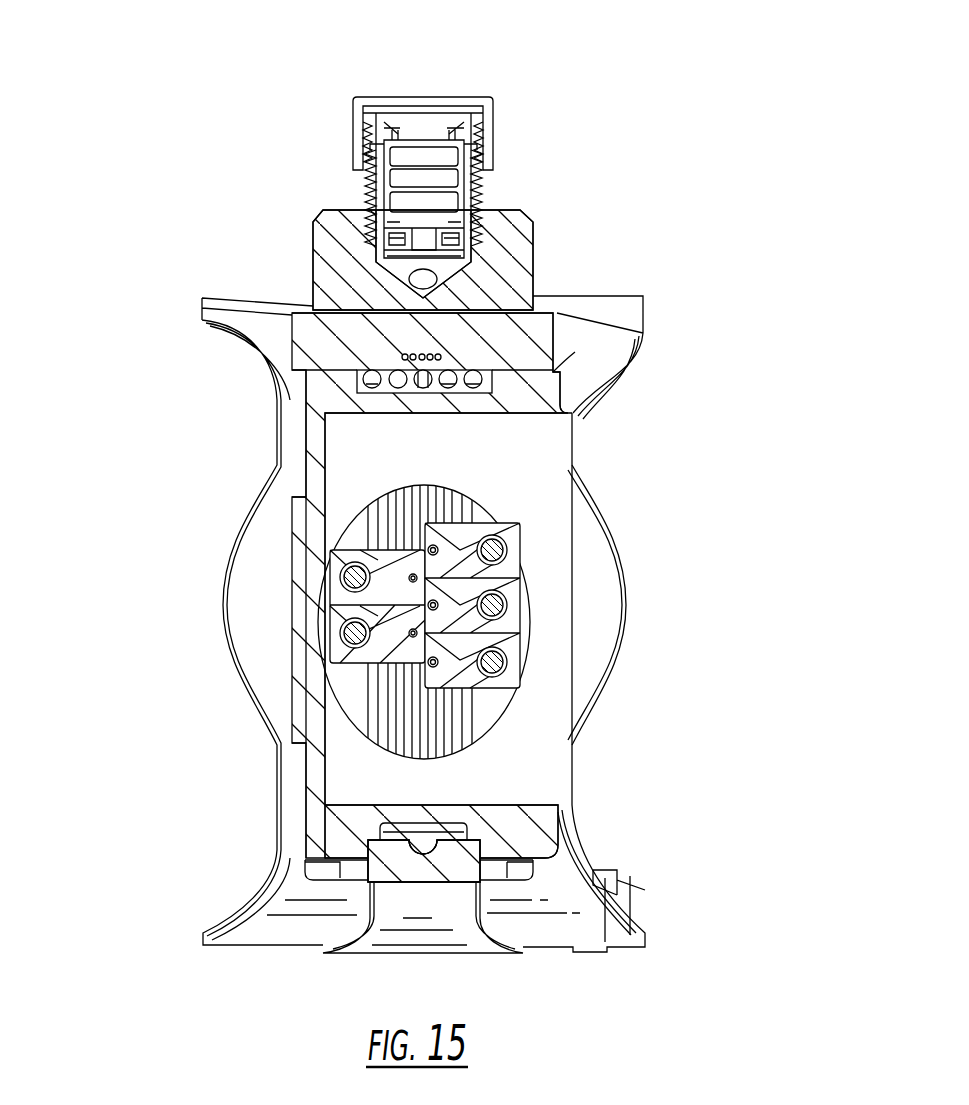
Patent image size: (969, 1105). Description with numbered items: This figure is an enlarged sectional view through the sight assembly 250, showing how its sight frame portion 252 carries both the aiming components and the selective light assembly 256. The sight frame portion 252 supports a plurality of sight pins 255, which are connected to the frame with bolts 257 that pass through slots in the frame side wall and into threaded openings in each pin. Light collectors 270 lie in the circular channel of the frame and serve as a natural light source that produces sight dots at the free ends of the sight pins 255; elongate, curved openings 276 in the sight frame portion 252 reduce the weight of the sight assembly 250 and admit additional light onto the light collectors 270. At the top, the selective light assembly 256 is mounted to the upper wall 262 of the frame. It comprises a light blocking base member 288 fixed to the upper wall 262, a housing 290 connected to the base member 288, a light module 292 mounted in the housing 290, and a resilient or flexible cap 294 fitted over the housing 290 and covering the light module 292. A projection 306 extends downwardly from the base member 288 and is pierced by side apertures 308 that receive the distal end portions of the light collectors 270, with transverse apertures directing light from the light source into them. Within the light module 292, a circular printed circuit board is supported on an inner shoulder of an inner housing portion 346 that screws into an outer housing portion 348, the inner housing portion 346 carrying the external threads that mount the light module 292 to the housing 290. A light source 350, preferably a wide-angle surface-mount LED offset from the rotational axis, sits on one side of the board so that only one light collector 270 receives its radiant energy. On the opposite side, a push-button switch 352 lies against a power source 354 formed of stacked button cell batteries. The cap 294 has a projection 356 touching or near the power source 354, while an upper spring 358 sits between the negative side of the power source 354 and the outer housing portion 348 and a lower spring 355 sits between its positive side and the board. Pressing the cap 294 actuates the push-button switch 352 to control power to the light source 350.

The sight assembly 250 is at (110, 345).
The sight frame portion 252 is at (445, 950).
The sight pins 255 is at (490, 668).
The selective light assembly 256 is at (513, 190).
The bolts 257 is at (492, 550).
The upper wall 262 is at (583, 306).
The light collectors 270 is at (445, 550).
The elongate, curved openings 276 is at (510, 447).
The light blocking base member 288 is at (545, 345).
The housing 290 is at (322, 229).
The light module 292 is at (322, 128).
The resilient or flexible cap 294 is at (453, 108).
The projection 306 is at (356, 383).
The side apertures 308 is at (475, 390).
The inner housing portion 346 is at (373, 197).
The outer housing portion 348 is at (362, 181).
The light source 350 is at (440, 254).
The push-button switch 352 is at (408, 226).
The power source 354 is at (441, 185).
The lower spring 355 is at (462, 232).
The projection 356 is at (435, 120).
The upper spring 358 is at (385, 150).